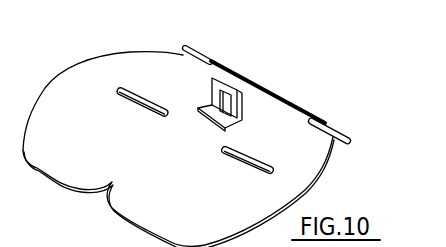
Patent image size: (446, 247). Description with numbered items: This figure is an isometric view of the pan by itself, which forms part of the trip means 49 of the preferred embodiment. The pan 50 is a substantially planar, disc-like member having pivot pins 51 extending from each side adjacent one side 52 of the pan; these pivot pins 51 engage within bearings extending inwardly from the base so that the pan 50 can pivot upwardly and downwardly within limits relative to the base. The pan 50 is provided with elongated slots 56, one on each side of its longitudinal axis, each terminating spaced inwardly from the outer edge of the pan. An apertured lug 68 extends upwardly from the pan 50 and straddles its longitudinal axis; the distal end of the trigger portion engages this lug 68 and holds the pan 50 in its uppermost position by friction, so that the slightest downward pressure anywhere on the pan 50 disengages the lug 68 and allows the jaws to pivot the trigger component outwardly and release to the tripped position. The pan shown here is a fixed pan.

The trip means 49 is at (250, 96).
The pan 50 is at (65, 170).
The pivot pins 51 is at (204, 52).
The one side of the pan 52 is at (320, 81).
The elongated slots 56 is at (245, 159).
The apertured lug 68 is at (207, 81).